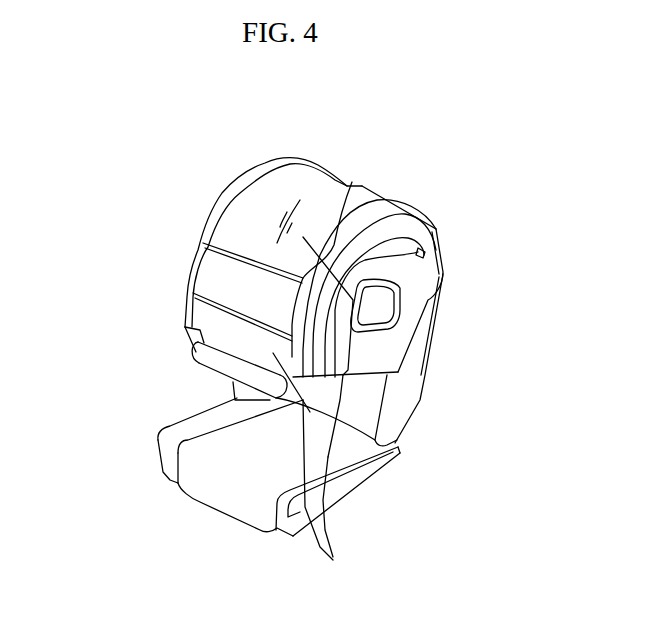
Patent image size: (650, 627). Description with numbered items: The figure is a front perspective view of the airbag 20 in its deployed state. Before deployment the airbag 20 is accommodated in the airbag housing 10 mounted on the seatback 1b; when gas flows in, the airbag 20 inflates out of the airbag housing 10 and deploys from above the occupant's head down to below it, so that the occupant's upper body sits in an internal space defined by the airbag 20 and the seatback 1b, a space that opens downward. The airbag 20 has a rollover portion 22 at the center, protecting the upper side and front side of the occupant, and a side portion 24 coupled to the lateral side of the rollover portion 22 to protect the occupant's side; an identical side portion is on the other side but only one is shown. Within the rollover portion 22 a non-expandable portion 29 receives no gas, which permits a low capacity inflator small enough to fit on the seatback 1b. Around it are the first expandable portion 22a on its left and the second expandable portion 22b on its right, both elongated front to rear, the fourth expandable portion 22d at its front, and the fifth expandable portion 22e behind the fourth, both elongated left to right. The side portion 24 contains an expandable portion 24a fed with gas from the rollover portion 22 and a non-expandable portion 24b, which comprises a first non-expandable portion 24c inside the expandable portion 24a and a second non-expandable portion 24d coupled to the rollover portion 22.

The airbag housing 10 is at (290, 346).
The seatback 1b is at (392, 413).
The airbag 20 is at (290, 260).
The rollover portion 22 is at (275, 260).
The first expandable portion 22a is at (352, 182).
The second expandable portion 22b is at (243, 187).
The fourth expandable portion 22d is at (217, 362).
The fifth expandable portion 22e is at (220, 282).
The side portion 24 is at (408, 253).
The expandable portion 24a is at (406, 332).
The non-expandable portion 24b is at (488, 178).
The first non-expandable portion 24c is at (388, 283).
The second non-expandable portion 24d is at (383, 230).
The non-expandable portion 29 is at (325, 493).